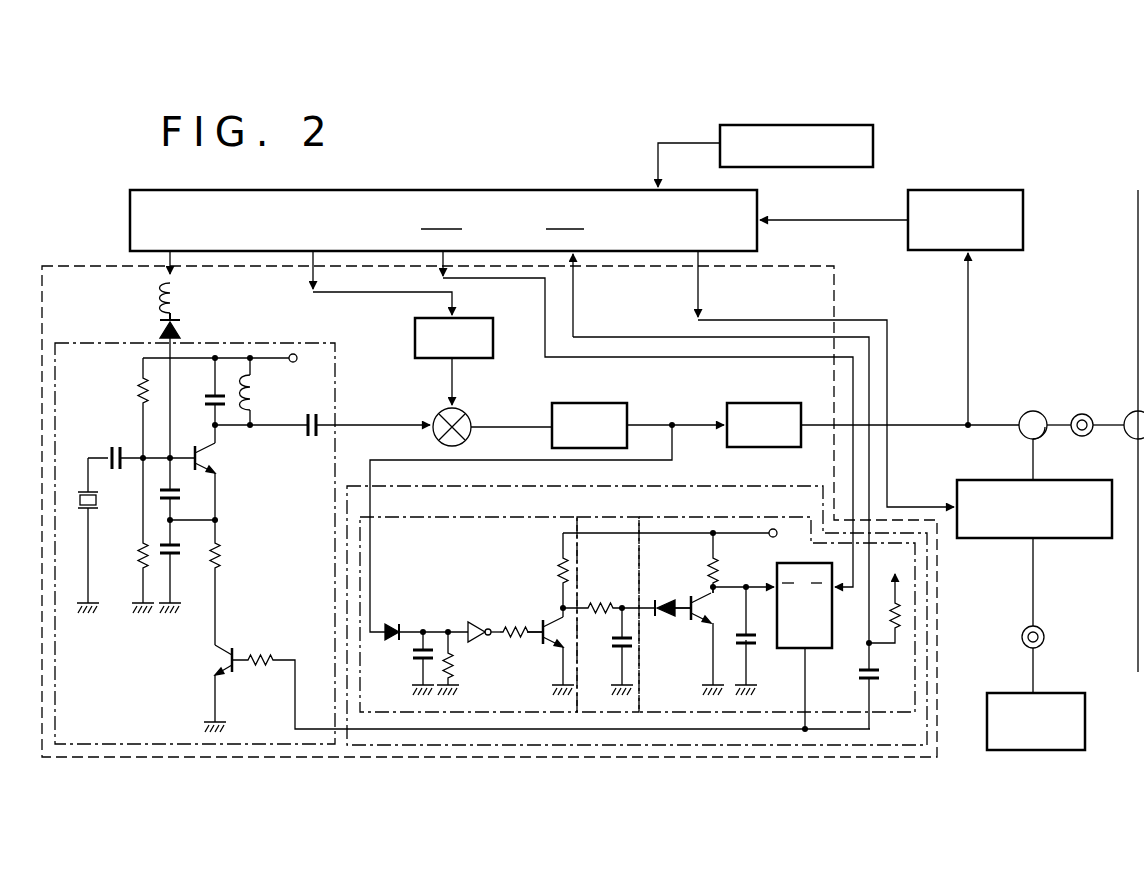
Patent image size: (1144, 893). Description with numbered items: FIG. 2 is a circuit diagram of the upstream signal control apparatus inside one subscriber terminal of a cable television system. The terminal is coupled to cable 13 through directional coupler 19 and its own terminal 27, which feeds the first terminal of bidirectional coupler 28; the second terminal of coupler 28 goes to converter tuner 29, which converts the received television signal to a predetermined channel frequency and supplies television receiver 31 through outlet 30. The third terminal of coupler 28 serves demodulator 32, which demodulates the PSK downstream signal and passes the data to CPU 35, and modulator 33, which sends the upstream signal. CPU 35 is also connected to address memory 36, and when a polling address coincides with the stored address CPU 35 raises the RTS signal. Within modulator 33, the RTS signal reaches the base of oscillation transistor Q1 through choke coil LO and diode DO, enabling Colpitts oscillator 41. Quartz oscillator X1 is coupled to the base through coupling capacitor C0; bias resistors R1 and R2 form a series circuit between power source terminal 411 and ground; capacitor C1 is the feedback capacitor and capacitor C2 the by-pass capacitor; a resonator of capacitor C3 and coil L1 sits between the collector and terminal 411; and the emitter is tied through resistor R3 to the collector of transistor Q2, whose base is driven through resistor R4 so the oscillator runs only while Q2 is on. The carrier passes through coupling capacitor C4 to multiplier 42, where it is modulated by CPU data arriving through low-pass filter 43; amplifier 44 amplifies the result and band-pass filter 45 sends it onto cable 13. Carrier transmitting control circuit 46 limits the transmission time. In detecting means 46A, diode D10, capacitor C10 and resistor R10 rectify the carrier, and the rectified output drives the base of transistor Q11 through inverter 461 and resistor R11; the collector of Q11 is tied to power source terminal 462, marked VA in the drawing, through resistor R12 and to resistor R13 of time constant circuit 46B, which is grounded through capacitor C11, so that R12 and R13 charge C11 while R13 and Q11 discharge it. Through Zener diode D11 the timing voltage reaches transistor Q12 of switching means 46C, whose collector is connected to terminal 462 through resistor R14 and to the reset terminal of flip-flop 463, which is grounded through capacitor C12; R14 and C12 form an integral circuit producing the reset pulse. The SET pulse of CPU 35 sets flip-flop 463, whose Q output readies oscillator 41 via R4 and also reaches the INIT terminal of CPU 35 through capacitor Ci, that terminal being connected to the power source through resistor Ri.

The CPU 35 is at (545, 190).
The address memory 36 is at (873, 145).
The demodulator 32 is at (985, 190).
The cable 13 is at (1138, 326).
The modulator 33 is at (75, 266).
The oscillator 41 is at (81, 343).
The power source terminal 411 is at (296, 362).
The low-pass filter 43 is at (415, 339).
The multiplier 42 is at (468, 417).
The amplifier 44 is at (602, 403).
The band-pass filter 45 is at (772, 403).
The carrier transmitting control circuit 46 is at (695, 486).
The detecting means 46A is at (460, 517).
The time constant circuit 46B is at (590, 517).
The switching means 46C is at (717, 517).
The inverter 461 is at (468, 622).
The power source terminal 462 is at (770, 543).
The flip-flop 463 is at (818, 648).
The bidirectional coupler 28 is at (1036, 411).
The terminal 27 is at (1086, 413).
The directional coupler 19 is at (1128, 411).
The converter tuner 29 is at (979, 480).
The outlet 30 is at (1045, 637).
The television receiver 31 is at (991, 693).
The choke coil LO is at (180, 296).
The diode DO is at (182, 330).
The bias resistor R1 is at (138, 382).
The bias resistor R2 is at (138, 558).
The resistor R3 is at (222, 555).
The resistor R4 is at (258, 658).
The coupling capacitor C0 is at (116, 446).
The feedback capacitor C1 is at (182, 496).
The by-pass capacitor C2 is at (182, 552).
The capacitor C3 is at (205, 401).
The coupling capacitor C4 is at (310, 440).
The quartz oscillator X1 is at (100, 500).
The coil L1 is at (258, 395).
The oscillation transistor Q1 is at (216, 450).
The transistor Q2 is at (214, 661).
The diode D10 is at (394, 622).
The capacitor C10 is at (414, 657).
The resistor R10 is at (454, 666).
The resistor R11 is at (518, 626).
The transistor Q11 is at (558, 647).
The resistor R12 is at (557, 574).
The resistor R13 is at (601, 603).
The capacitor C11 is at (614, 646).
The Zener diode D11 is at (660, 616).
The transistor Q12 is at (699, 626).
The resistor R14 is at (706, 572).
The capacitor C12 is at (750, 645).
The voltage terminal VA is at (786, 535).
The capacitor Ci is at (862, 664).
The resistor Ri is at (896, 634).